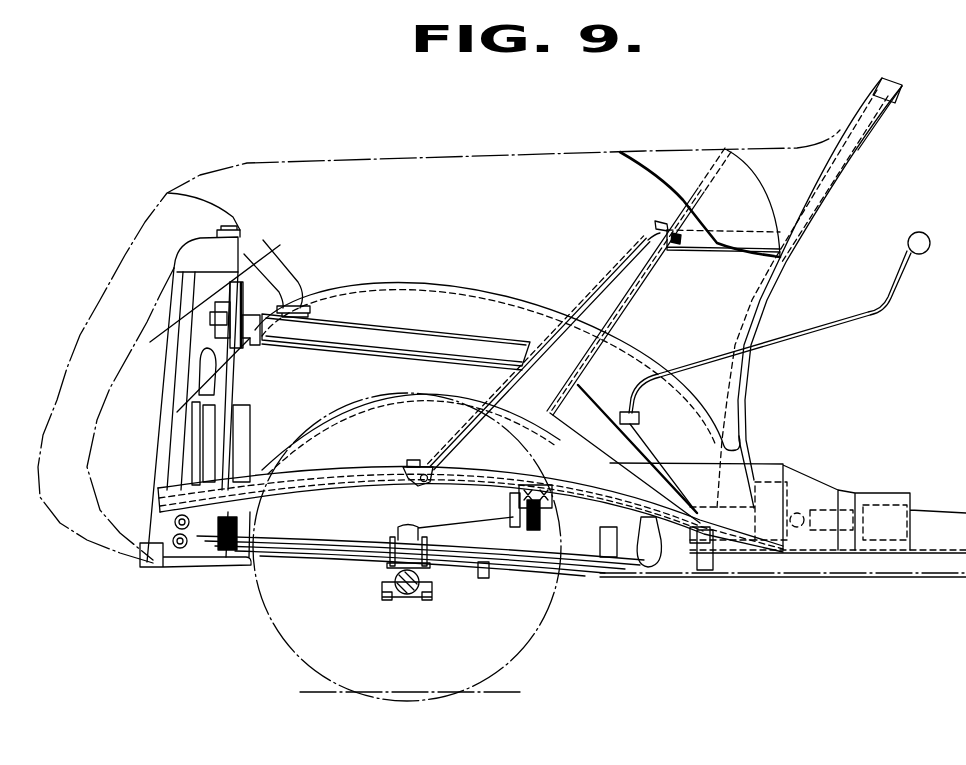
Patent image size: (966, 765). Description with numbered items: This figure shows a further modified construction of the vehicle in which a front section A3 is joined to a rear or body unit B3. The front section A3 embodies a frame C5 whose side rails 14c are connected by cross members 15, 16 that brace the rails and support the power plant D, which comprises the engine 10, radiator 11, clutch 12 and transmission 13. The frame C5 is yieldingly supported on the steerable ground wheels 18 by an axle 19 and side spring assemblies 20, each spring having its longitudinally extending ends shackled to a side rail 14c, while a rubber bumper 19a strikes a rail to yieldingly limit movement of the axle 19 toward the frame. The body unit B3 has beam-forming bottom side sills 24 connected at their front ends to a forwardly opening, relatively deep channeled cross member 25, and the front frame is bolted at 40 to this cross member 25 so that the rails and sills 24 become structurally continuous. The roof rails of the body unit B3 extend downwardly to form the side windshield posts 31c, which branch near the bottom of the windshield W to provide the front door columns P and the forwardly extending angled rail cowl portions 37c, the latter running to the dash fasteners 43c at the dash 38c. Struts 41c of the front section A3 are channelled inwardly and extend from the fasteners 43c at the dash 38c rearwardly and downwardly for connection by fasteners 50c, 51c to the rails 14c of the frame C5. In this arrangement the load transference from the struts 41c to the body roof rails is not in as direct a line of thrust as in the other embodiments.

The front section A3 is at (405, 172).
The rear or body unit B3 is at (877, 96).
The windshield W is at (854, 110).
The side windshield post 31c is at (863, 144).
The dash 38c is at (672, 222).
The angled rail cowl portion 37c is at (704, 240).
The dash fastener 43c is at (673, 244).
The strut 41c is at (613, 280).
The radiator 11 is at (173, 302).
The engine 10 is at (342, 350).
The power plant D is at (399, 343).
The frame C5 is at (310, 468).
The rail 14c is at (367, 478).
The cross member 15 is at (244, 460).
The fastener 50c is at (414, 460).
The fastener 51c is at (455, 476).
The transmission 13 is at (681, 482).
The front door column or post P is at (734, 395).
The steerable ground wheel 18 is at (525, 637).
The clutch 12 is at (595, 545).
The rubber bumper 19a is at (398, 527).
The axle 19 is at (402, 600).
The side spring assembly 20 is at (472, 572).
The cross member 16 is at (513, 517).
The bolt connection 40 is at (704, 530).
The channeled cross member 25 is at (711, 583).
The bottom side sill 24 is at (884, 578).